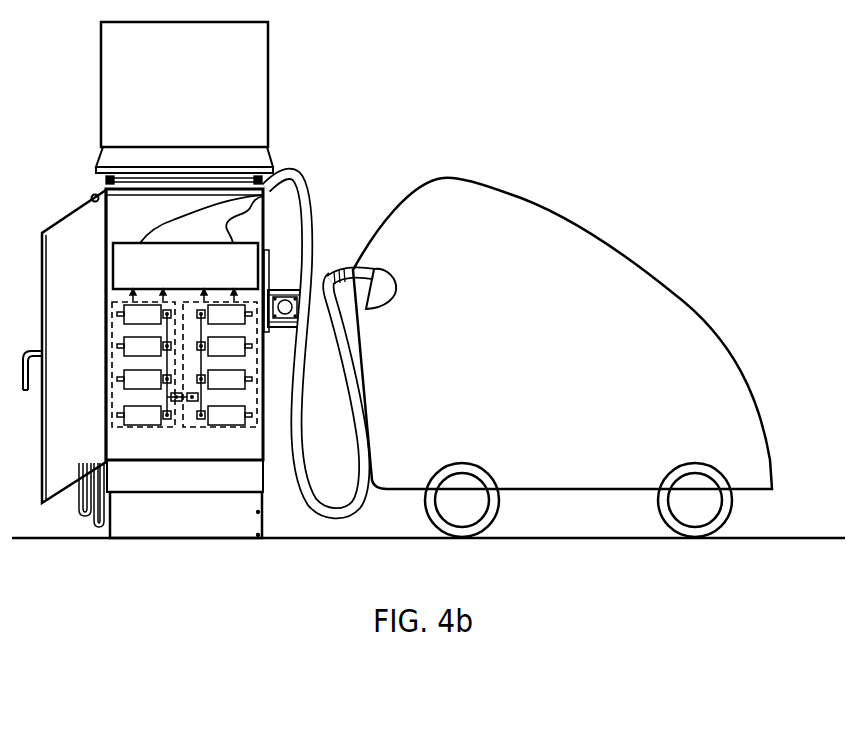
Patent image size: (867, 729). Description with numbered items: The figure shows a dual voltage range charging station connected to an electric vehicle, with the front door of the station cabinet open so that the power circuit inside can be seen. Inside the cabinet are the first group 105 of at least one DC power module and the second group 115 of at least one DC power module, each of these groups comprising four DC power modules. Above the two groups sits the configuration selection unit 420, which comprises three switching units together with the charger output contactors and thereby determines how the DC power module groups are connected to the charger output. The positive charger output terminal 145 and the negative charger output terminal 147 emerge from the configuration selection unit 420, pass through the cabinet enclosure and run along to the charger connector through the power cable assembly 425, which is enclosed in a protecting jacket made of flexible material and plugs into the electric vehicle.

The first group of at least one DC power module 105 is at (138, 427).
The second group of at least one DC power module 115 is at (222, 427).
The charger output terminal EV+ 145 is at (173, 220).
The charger output terminal EV− 147 is at (227, 225).
The configuration selection unit 420 is at (132, 242).
The power cable assembly 425 is at (311, 187).